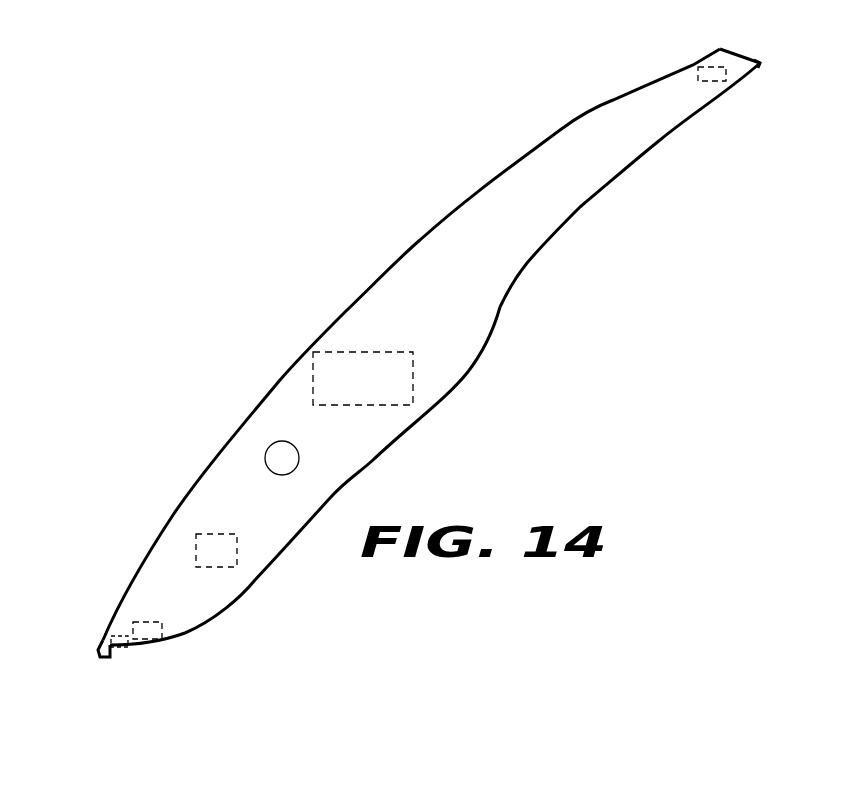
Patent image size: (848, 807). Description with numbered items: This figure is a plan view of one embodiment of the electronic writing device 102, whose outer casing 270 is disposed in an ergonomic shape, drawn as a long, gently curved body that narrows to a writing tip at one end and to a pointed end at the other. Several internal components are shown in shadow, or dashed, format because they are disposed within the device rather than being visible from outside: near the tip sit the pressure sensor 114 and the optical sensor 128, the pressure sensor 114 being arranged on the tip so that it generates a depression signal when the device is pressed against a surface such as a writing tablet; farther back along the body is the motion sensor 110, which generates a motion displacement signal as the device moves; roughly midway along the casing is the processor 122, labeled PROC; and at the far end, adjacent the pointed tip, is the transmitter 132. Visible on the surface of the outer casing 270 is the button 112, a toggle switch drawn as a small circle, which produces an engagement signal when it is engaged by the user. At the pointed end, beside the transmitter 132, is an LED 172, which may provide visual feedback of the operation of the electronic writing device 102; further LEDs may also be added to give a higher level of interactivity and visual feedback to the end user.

The electronic writing device 102 is at (429, 353).
The motion sensor 110 is at (203, 533).
The toggle switch 112 is at (268, 447).
The pressure sensor 114 is at (163, 632).
The processor 122 is at (340, 350).
The optical sensor 128 is at (110, 639).
The transmitter 132 is at (707, 64).
The LED 172 is at (761, 62).
The outer casing 270 is at (527, 265).